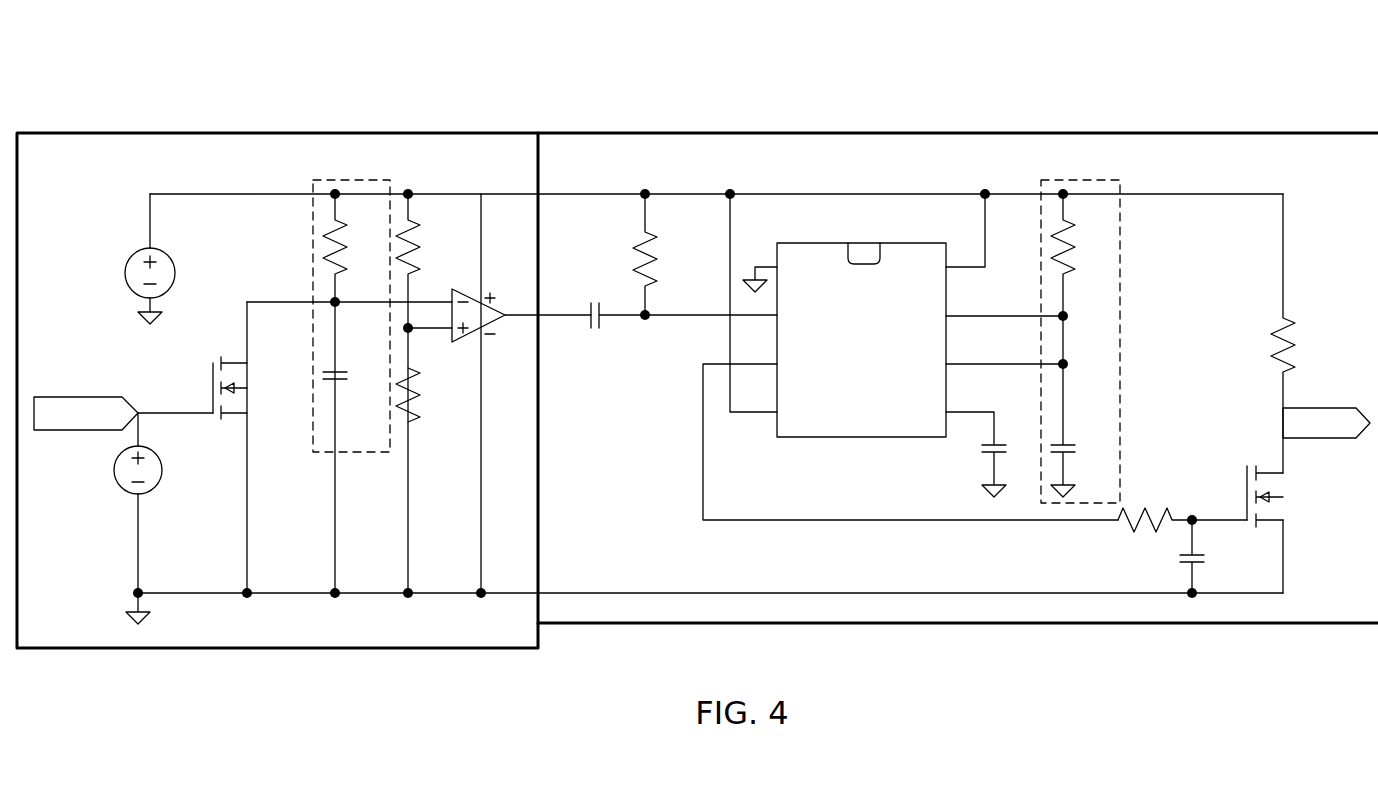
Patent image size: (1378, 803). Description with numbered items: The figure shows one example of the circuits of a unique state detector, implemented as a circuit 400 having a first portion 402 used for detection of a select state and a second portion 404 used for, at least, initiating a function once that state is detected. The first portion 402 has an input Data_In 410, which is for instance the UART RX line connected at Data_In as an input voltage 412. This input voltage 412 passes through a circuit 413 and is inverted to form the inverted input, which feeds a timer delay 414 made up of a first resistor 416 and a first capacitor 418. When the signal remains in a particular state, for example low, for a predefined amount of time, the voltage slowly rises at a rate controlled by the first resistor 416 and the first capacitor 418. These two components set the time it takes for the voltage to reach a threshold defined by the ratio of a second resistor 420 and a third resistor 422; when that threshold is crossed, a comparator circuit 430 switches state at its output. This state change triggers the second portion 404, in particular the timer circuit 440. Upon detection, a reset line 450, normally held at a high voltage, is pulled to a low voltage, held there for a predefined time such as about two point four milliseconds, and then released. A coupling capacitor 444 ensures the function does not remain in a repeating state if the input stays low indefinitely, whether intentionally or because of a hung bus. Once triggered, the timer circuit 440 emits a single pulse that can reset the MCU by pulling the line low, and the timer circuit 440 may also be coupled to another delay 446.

The circuit 400 is at (1330, 74).
The first portion 402 is at (253, 131).
The second portion 404 is at (938, 131).
The Data_In 410 is at (61, 394).
The voltage V1 412 is at (183, 443).
The circuit 413 is at (228, 358).
The timer delay 414 is at (373, 455).
The resistor R1 416 is at (372, 217).
The capacitor C1 418 is at (367, 352).
The resistor R2 420 is at (442, 217).
The resistor R3 422 is at (472, 390).
The comparator circuit 430 is at (486, 327).
The circuit NE555 440 is at (905, 437).
The coupling capacitor C2 444 is at (597, 273).
The delay 446 is at (1108, 180).
The reset line 450 is at (1344, 406).